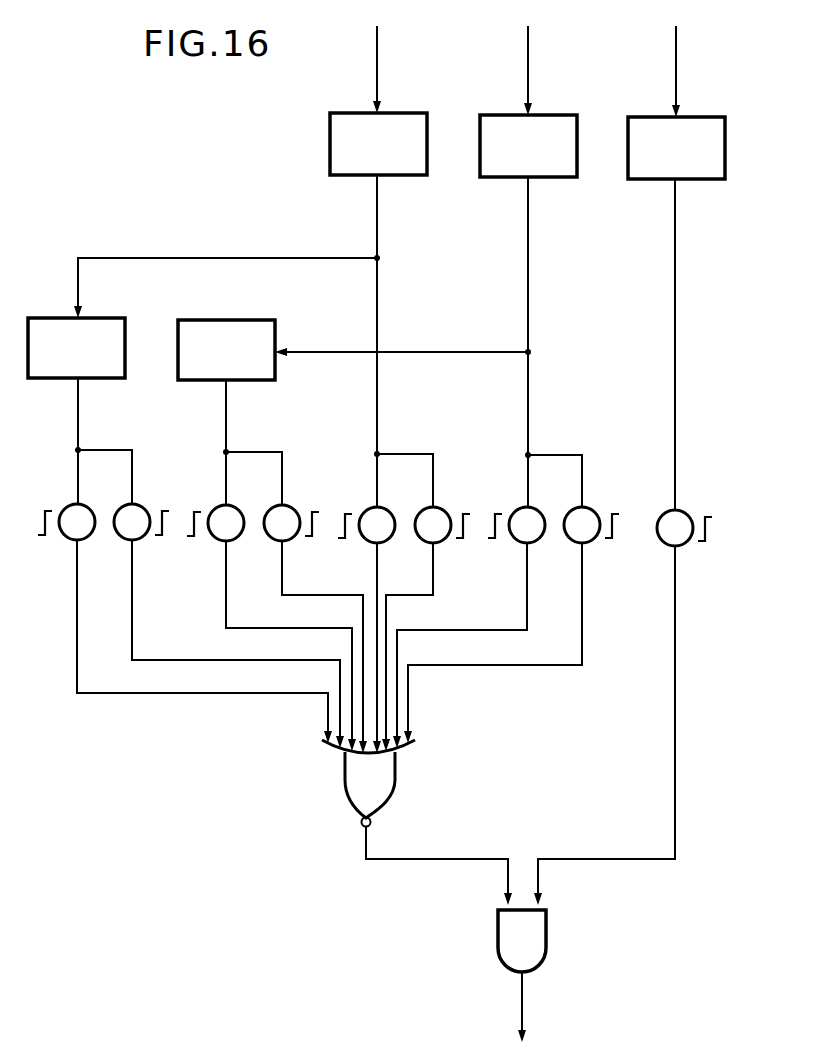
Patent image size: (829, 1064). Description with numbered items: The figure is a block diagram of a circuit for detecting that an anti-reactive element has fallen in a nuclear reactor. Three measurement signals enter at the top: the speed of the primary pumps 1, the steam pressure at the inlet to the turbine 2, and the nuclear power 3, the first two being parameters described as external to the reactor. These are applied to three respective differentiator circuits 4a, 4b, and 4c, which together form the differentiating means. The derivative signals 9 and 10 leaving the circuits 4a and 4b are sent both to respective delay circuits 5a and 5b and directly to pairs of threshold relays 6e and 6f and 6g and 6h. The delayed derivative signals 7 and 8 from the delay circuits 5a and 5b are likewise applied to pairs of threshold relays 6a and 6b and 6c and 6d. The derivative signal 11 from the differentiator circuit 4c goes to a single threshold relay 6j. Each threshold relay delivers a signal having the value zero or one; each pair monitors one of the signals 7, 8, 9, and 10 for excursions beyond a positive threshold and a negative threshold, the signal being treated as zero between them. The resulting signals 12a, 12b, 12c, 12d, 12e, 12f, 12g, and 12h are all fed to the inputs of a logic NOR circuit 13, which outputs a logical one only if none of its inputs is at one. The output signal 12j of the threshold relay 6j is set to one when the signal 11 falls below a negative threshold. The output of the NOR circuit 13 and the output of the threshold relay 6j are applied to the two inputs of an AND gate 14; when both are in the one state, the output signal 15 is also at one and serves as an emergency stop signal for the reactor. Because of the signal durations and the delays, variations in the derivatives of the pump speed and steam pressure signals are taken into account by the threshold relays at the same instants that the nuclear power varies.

The primary pump speed signal 1 is at (377, 70).
The turbine inlet steam pressure signal 2 is at (528, 70).
The nuclear power signal 3 is at (676, 70).
The differentiator circuit 4a is at (400, 153).
The differentiator circuit 4b is at (550, 155).
The differentiator circuit 4c is at (698, 157).
The delay circuit 5a is at (100, 333).
The delay circuit 5b is at (250, 335).
The delayed derivative signal 7 is at (78, 414).
The delayed derivative signal 8 is at (226, 414).
The derivative signal 9 is at (377, 414).
The derivative signal 10 is at (528, 414).
The derivative signal 11 is at (675, 416).
The threshold relay 6a is at (71, 506).
The threshold relay 6b is at (132, 505).
The threshold relay 6c is at (223, 506).
The threshold relay 6d is at (282, 505).
The threshold relay 6e is at (375, 506).
The threshold relay 6f is at (434, 505).
The threshold relay 6g is at (527, 506).
The threshold relay 6h is at (582, 505).
The threshold relay 6j is at (673, 506).
The threshold relay output signal 12a is at (85, 611).
The threshold relay output signal 12b is at (145, 611).
The threshold relay output signal 12c is at (226, 602).
The threshold relay output signal 12d is at (292, 589).
The threshold relay output signal 12e is at (377, 571).
The threshold relay output signal 12f is at (433, 580).
The threshold relay output signal 12g is at (532, 613).
The threshold relay output signal 12h is at (593, 613).
The threshold relay output signal 12j is at (675, 612).
The logic NOR circuit 13 is at (360, 778).
The AND gate 14 is at (512, 937).
The output signal 15 is at (522, 997).